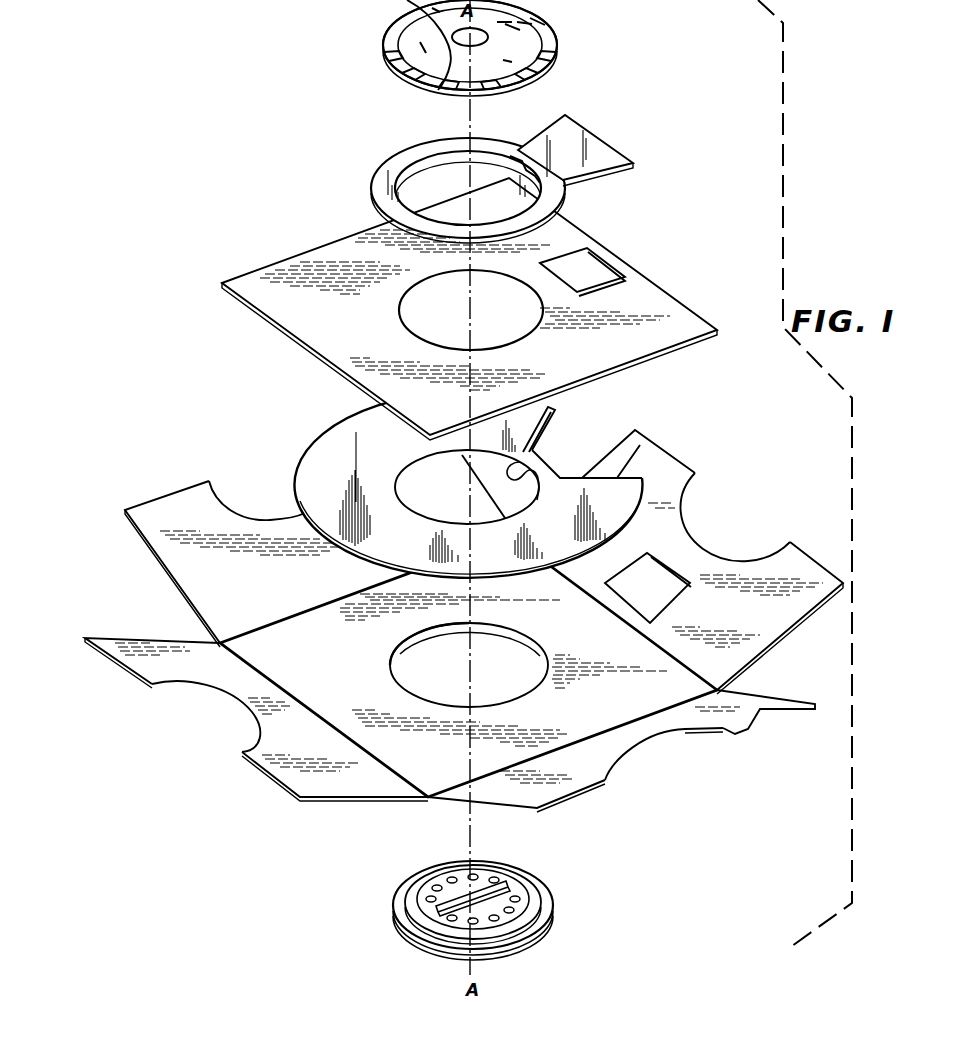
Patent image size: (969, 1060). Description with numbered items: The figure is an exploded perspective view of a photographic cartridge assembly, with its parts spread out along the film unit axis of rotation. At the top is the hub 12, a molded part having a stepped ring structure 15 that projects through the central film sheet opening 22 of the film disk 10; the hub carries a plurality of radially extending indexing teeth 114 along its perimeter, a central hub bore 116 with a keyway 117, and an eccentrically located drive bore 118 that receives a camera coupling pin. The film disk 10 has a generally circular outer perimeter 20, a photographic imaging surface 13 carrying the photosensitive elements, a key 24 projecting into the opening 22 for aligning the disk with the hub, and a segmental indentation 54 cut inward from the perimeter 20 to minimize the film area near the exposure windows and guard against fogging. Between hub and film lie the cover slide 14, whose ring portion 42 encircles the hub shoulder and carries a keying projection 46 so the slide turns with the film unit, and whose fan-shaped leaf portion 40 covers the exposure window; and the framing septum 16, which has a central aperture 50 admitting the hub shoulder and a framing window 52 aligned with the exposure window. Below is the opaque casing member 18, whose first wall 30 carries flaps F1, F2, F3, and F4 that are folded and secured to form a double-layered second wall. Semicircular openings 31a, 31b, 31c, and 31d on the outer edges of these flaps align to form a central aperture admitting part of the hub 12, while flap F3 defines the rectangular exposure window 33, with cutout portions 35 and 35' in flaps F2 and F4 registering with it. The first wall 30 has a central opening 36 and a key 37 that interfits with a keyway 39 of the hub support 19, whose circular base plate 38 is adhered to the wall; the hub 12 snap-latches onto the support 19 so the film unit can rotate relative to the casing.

The film disk 10 is at (322, 421).
The hub 12 is at (372, 51).
The photographic imaging surface 13 is at (328, 452).
The cover slide 14 is at (380, 150).
The stepped ring structure 15 is at (553, 32).
The framing septum 16 is at (270, 253).
The casing member 18 is at (166, 474).
The hub support 19 is at (386, 880).
The outer perimeter 20 is at (535, 402).
The central film sheet opening 22 is at (532, 449).
The key 24 is at (542, 465).
The first wall 30 is at (456, 629).
The semicircular opening 31a is at (187, 689).
The semicircular opening 31b is at (221, 500).
The semicircular opening 31c is at (743, 557).
The semicircular opening 31d is at (693, 730).
The exposure window 33 is at (663, 578).
The cutout portion 35 is at (467, 487).
The cutout portion 35' is at (774, 701).
The opening 36 is at (522, 695).
The key 37 is at (405, 686).
The base plate 38 is at (430, 940).
The keyway 39 is at (408, 925).
The leaf portion 40 is at (602, 148).
The ring portion 42 is at (386, 190).
The keying projection 46 is at (517, 166).
The central aperture 50 is at (523, 336).
The framing window 52 is at (598, 268).
The segmental indentation 54 is at (640, 447).
The indexing teeth 114 is at (553, 52).
The hub bore 116 is at (446, 72).
The keyway 117 is at (408, 13).
The drive bore 118 is at (507, 29).
The flap F1 is at (142, 662).
The flap F2 is at (193, 576).
The flap F3 is at (797, 564).
The flap F4 is at (573, 772).